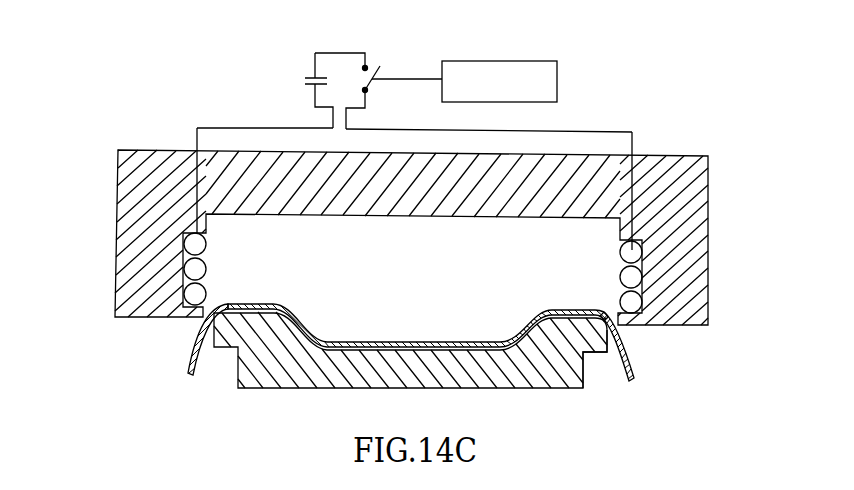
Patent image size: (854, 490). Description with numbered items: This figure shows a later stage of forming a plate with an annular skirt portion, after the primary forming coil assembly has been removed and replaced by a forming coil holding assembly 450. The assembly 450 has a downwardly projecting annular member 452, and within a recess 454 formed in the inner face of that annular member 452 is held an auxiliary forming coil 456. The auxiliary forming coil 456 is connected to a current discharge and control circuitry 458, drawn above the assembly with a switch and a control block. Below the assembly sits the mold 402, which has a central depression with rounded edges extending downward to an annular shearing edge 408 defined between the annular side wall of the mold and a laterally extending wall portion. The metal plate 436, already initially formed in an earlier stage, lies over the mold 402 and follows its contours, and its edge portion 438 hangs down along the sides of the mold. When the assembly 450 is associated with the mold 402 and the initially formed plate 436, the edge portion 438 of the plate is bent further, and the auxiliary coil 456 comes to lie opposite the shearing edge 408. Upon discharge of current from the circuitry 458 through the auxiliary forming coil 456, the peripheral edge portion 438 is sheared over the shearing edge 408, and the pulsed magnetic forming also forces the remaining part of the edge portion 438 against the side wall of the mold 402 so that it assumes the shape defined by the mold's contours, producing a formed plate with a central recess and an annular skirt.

The forming coil holding assembly 450 is at (412, 194).
The downwardly projecting annular member 452 is at (697, 285).
The recess 454 is at (205, 280).
The auxiliary forming coil 456 is at (183, 258).
The current discharge and control circuitry 458 is at (258, 72).
The mold 402 is at (313, 375).
The annular shearing edge 408 is at (605, 352).
The metal plate 436 is at (400, 345).
The edge portions 438 is at (627, 355).